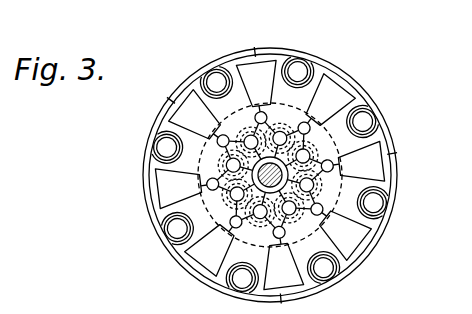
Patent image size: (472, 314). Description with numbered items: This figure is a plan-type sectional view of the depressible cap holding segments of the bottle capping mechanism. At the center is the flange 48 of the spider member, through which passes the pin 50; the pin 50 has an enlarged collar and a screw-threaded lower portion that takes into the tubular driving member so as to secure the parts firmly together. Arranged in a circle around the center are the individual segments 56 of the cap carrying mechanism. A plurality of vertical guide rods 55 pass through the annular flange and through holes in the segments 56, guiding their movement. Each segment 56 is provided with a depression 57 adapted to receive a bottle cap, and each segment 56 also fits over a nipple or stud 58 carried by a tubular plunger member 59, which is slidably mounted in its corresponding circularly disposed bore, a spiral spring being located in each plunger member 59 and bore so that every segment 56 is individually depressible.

The flange 48 is at (289, 174).
The pin 50 is at (300, 150).
The vertical guide rods 55 is at (218, 136).
The segments 56 is at (275, 68).
The depression 57 is at (383, 212).
The nipple or stud 58 is at (281, 131).
The tubular plunger member 59 is at (269, 174).